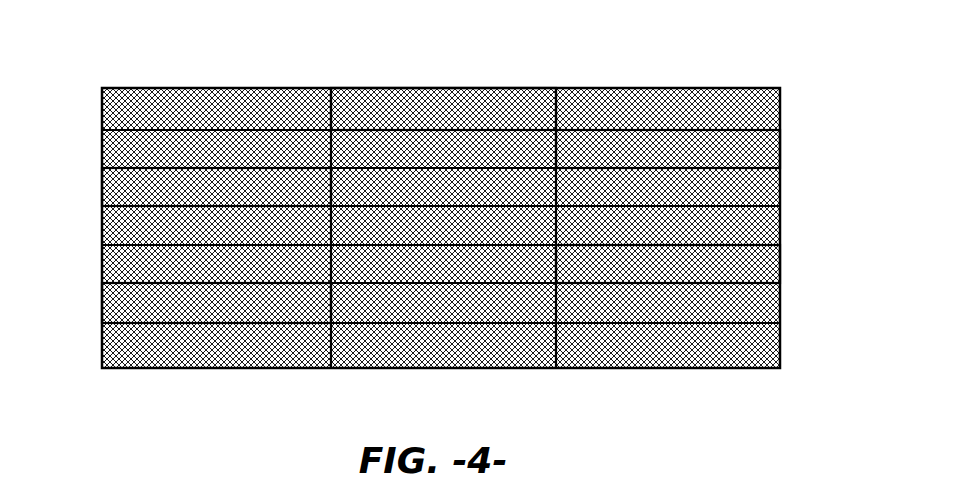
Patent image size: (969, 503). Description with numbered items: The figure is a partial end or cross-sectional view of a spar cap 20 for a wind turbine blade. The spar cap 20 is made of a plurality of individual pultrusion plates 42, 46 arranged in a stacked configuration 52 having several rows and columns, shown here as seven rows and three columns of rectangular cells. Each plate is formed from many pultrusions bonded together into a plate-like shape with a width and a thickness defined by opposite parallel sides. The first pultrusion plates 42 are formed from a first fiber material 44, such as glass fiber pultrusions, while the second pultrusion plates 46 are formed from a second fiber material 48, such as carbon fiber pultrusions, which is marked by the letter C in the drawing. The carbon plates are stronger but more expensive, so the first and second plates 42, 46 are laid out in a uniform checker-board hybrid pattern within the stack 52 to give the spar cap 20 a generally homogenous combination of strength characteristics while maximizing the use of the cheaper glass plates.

The spar cap 20 is at (808, 68).
The stacked configuration 52 is at (506, 80).
The first fiber material 44 is at (112, 177).
The second fiber material 48 is at (115, 303).
The second pultrusion plate 46 is at (772, 147).
The first pultrusion plate 42 is at (772, 255).